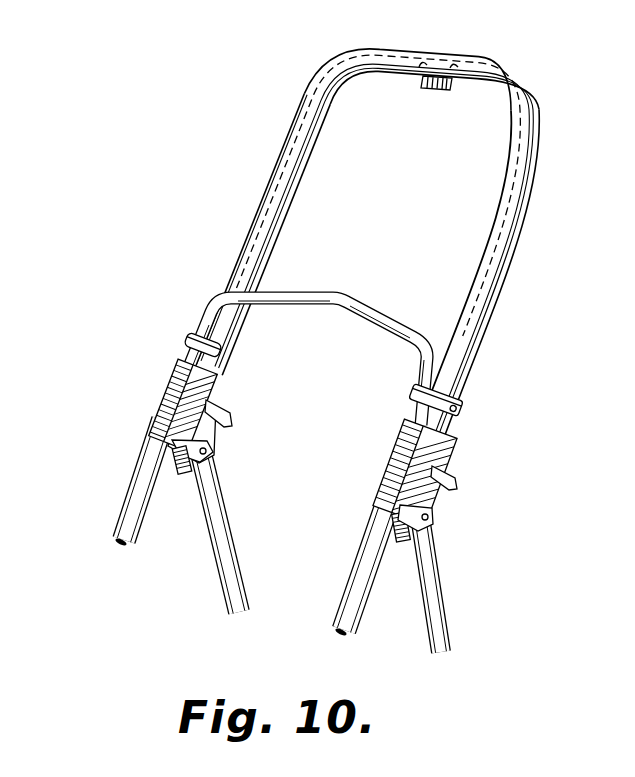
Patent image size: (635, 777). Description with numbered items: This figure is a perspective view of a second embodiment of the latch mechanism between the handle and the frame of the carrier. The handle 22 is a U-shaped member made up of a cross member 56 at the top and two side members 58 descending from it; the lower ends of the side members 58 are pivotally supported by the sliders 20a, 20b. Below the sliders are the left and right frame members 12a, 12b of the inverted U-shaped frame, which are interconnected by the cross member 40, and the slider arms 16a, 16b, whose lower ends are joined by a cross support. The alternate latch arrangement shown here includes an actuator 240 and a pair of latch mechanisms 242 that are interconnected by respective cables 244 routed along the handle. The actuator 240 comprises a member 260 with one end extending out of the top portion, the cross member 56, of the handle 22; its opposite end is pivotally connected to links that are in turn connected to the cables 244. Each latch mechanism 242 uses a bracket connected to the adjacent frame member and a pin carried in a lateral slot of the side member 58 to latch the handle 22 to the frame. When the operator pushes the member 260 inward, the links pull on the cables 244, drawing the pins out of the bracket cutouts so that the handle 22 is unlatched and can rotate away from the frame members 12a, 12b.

The handle 22 is at (412, 223).
The cross member 56 is at (414, 52).
The side members 58 is at (277, 162).
The cables 244 is at (539, 111).
The actuator 240 is at (424, 94).
The member 260 is at (444, 91).
The cross member 40 is at (343, 294).
The latch mechanisms 242 is at (167, 316).
The slider 20a is at (165, 395).
The slider 20b is at (392, 455).
The left frame member 12a is at (128, 490).
The right frame member 12b is at (349, 581).
The slider arm 16a is at (231, 537).
The slider arm 16b is at (437, 563).